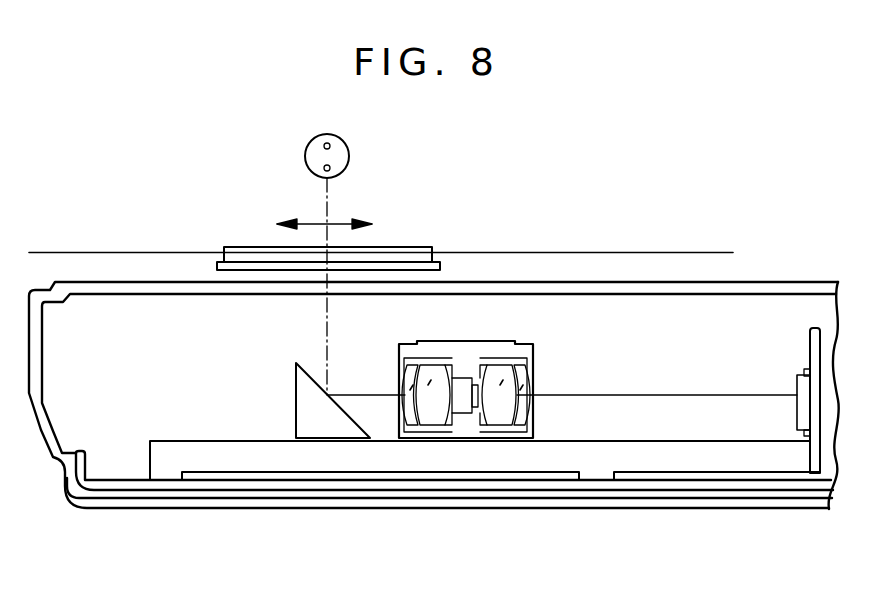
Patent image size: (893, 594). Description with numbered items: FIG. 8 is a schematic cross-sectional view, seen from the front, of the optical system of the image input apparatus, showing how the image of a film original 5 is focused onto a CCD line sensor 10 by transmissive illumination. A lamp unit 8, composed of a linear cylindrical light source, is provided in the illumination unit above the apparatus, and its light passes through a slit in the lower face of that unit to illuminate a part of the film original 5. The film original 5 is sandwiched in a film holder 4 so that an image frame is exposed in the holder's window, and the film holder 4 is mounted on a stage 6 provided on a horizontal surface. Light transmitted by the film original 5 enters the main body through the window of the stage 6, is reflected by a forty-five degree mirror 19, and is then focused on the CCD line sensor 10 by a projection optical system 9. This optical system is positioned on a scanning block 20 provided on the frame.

The film holder 4 is at (418, 248).
The film original 5 is at (678, 252).
The stage 6 is at (440, 263).
The lamp unit 8 is at (340, 162).
The projection optical system 9 is at (470, 432).
The CCD line sensor 10 is at (805, 407).
The 45° mirror 19 is at (318, 422).
The scanning block 20 is at (167, 458).